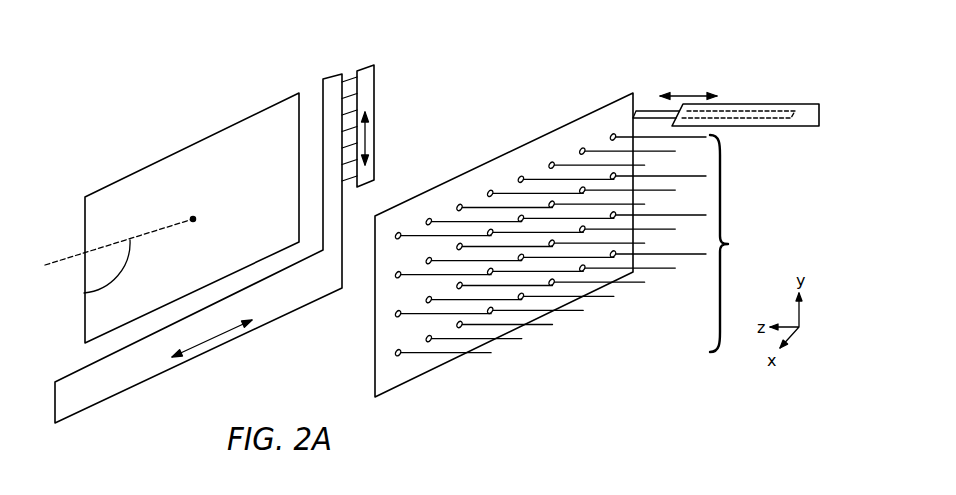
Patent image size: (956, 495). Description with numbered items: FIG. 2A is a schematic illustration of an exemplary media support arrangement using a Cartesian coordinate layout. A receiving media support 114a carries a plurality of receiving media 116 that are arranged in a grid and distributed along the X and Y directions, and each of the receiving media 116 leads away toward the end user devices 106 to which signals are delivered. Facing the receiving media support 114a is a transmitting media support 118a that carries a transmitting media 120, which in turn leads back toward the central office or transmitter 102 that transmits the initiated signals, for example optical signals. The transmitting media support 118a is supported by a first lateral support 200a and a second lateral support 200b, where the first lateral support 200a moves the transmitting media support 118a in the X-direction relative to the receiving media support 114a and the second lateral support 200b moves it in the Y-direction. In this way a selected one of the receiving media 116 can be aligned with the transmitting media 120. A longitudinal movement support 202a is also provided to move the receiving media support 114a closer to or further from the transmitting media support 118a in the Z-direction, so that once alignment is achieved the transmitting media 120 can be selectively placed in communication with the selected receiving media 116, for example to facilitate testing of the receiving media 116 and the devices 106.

The transmitting media support 118a is at (270, 120).
The transmitter 102 is at (67, 259).
The transmitting media 120 is at (84, 293).
The first lateral support 200a is at (198, 248).
The second lateral support 200b is at (366, 92).
The receiving media support 114a is at (595, 122).
The receiving media 116 is at (567, 312).
The longitudinal movement support 202a is at (748, 110).
The end user devices 106 is at (749, 243).